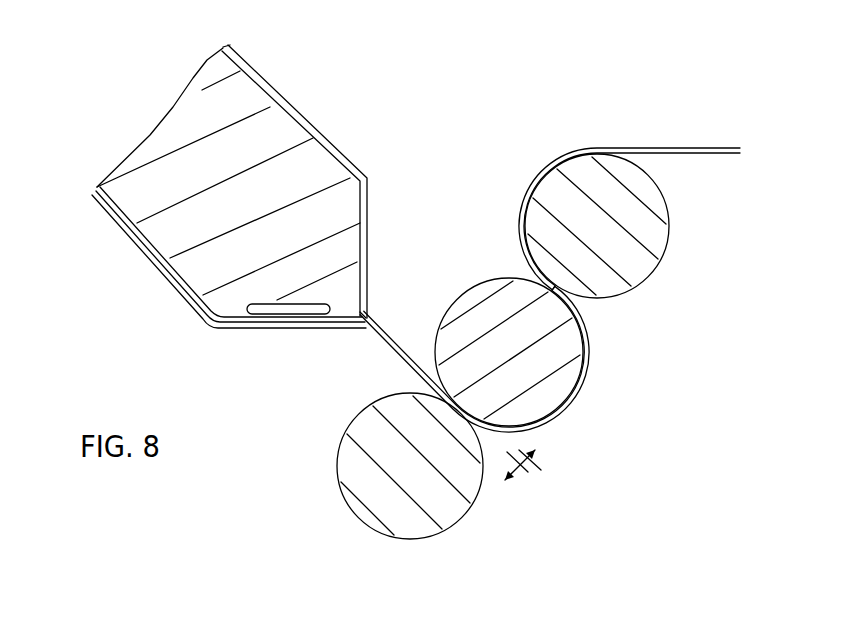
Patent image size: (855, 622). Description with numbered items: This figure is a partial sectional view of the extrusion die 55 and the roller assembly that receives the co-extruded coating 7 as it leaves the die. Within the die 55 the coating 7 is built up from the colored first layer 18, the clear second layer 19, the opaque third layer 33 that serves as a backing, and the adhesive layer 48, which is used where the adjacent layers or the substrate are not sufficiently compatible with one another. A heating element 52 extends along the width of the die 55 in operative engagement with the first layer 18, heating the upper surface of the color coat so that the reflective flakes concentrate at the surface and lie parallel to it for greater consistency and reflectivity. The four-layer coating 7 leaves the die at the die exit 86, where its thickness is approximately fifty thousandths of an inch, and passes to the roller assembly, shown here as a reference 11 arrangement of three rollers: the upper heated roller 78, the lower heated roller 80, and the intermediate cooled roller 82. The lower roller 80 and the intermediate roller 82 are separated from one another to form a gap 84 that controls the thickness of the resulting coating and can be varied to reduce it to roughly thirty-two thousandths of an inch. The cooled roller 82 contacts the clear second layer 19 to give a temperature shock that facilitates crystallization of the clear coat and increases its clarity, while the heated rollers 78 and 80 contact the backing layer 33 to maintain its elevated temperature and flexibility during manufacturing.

The apparatus 11 is at (41, 10).
The second layer 19 is at (240, 60).
The extrusion die 55 is at (283, 128).
The first layer 18 is at (97, 188).
The adhesive layer 48 is at (95, 195).
The third layer 33 is at (115, 230).
The heating element 52 is at (267, 310).
The die exit 86 is at (382, 310).
The coating 7 is at (390, 349).
The lower heated roller 80 is at (547, 187).
The intermediate cooled roller 82 is at (563, 347).
The upper heated roller 78 is at (363, 437).
The gap 84 is at (537, 449).